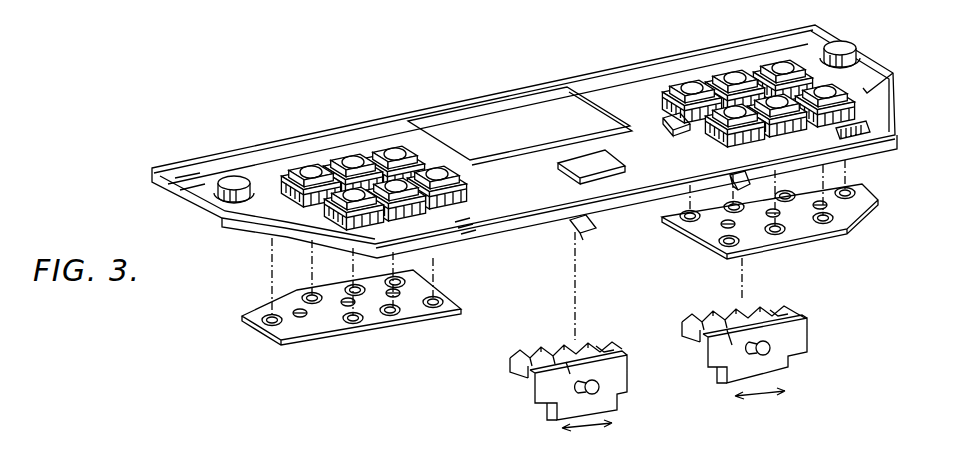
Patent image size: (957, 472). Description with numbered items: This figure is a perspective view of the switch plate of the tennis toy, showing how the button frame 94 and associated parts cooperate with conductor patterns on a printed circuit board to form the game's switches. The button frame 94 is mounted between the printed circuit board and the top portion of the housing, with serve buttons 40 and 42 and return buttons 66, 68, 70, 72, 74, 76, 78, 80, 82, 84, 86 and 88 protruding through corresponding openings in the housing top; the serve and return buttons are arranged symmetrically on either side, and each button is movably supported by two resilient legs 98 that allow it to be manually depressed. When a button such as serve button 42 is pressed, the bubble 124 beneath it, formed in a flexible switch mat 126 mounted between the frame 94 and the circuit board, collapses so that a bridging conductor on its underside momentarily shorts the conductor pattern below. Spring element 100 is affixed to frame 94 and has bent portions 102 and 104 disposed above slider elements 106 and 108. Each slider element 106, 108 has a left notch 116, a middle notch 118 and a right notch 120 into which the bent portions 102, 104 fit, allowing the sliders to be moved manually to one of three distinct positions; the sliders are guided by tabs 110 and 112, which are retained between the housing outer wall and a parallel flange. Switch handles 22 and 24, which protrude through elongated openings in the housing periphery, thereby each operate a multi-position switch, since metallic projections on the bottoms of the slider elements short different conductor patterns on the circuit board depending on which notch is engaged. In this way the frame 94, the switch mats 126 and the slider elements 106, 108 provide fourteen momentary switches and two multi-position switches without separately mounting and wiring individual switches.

The switch handle 22 is at (600, 389).
The switch handle 24 is at (777, 350).
The serve button 40 is at (852, 42).
The serve button 42 is at (217, 200).
The return button 66 is at (775, 62).
The return button 68 is at (885, 93).
The return button 70 is at (725, 72).
The return button 72 is at (801, 118).
The return button 74 is at (688, 82).
The return button 76 is at (688, 130).
The return button 78 is at (305, 162).
The return button 80 is at (338, 200).
The return button 82 is at (348, 156).
The return button 84 is at (418, 166).
The return button 86 is at (425, 156).
The return button 88 is at (445, 176).
The button frame 94 is at (501, 103).
The resilient legs 98 is at (190, 166).
The spring element 100 is at (600, 178).
The bent portion 102 is at (584, 229).
The bent portion 104 is at (740, 170).
The slider element 106 is at (620, 386).
The slider element 108 is at (717, 373).
The tab 110 is at (553, 410).
The tab 112 is at (763, 360).
The left notch 116 is at (568, 368).
The middle notch 118 is at (563, 353).
The right notch 120 is at (585, 350).
The bubbles 124 is at (277, 327).
The flexible switch mats 126 is at (579, 278).